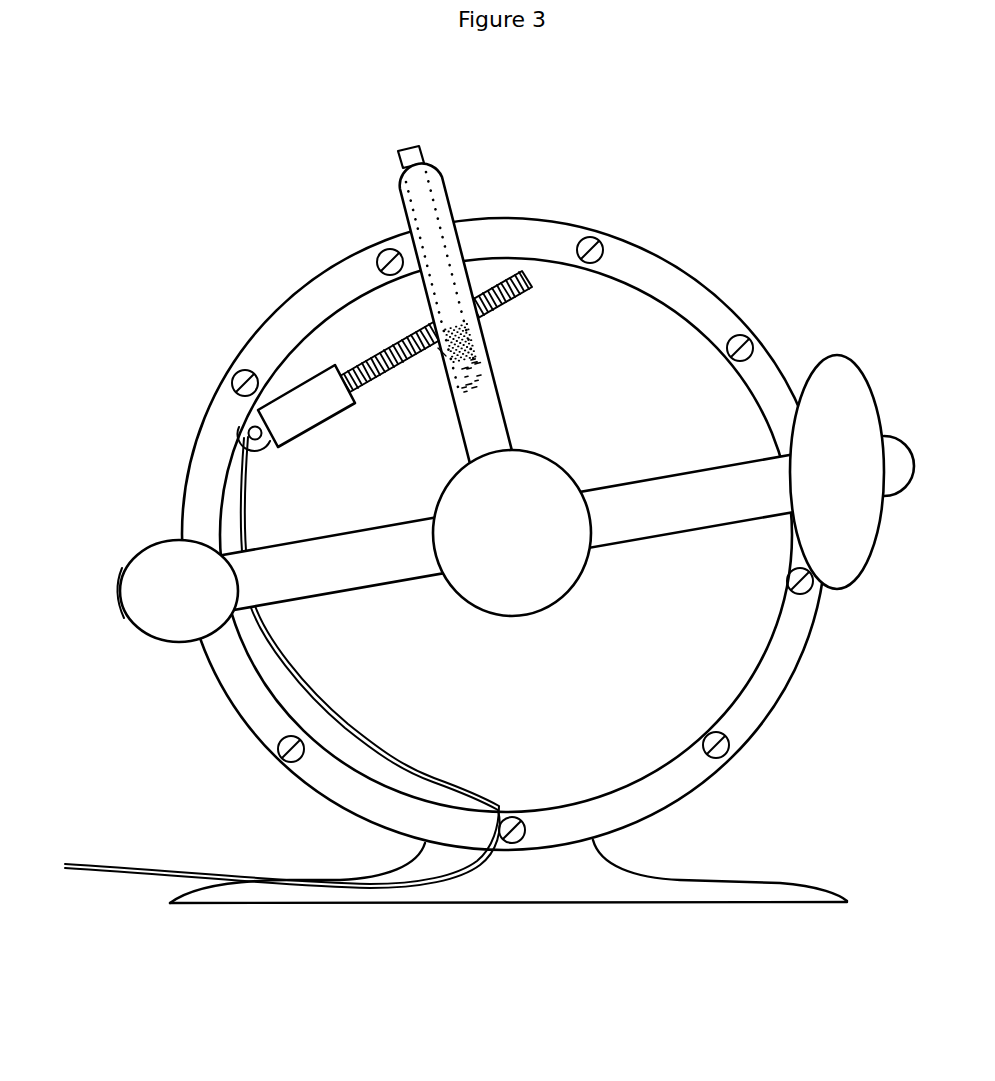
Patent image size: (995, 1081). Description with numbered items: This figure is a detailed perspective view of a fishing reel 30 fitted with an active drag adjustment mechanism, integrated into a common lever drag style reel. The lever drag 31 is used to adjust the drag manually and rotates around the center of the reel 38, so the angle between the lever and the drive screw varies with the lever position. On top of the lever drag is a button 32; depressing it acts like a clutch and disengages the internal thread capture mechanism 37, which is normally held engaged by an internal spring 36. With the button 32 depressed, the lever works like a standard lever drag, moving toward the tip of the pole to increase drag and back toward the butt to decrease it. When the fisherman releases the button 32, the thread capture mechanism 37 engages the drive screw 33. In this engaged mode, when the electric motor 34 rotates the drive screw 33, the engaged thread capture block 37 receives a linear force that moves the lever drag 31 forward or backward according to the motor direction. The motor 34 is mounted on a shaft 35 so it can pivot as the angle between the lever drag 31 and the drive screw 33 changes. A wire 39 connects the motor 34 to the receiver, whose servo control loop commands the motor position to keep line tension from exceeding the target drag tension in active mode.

The fishing reel 30 is at (673, 363).
The lever drag 31 is at (468, 294).
The button 32 is at (400, 150).
The drive screw 33 is at (305, 397).
The electric motor 34 is at (403, 350).
The shaft 35 is at (240, 428).
The internal spring 36 is at (440, 358).
The thread capture mechanism 37 is at (470, 373).
The center of the reel 38 is at (500, 528).
The wire 39 is at (143, 866).